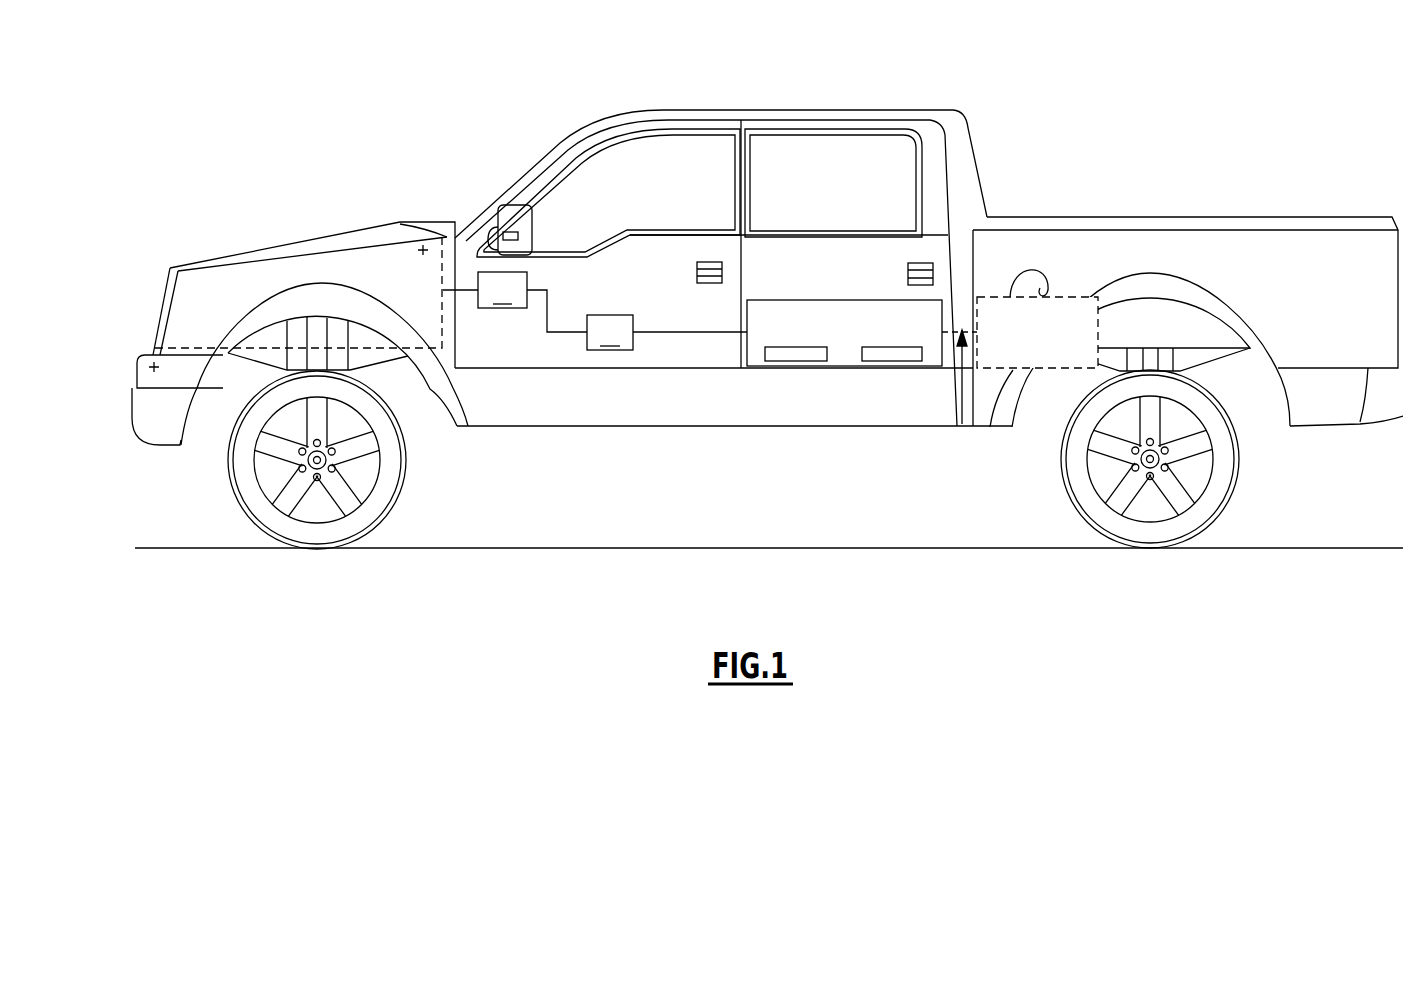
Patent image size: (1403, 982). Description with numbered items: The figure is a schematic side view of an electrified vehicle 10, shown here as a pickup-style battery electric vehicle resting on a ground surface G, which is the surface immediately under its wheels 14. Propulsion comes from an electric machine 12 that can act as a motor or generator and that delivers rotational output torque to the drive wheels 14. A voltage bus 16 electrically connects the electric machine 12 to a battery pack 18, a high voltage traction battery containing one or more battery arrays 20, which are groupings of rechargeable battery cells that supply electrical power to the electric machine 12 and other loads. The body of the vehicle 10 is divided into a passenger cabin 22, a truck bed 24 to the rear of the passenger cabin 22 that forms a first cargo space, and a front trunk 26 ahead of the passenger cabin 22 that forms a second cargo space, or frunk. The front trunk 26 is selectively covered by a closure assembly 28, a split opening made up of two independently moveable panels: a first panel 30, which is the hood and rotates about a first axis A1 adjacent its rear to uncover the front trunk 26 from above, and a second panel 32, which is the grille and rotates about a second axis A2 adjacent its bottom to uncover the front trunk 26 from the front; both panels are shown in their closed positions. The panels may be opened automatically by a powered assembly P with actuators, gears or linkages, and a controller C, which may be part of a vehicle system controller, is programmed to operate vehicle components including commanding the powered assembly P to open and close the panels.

The electrified vehicle 10 is at (734, 323).
The electric machine 12 is at (1040, 288).
The drive wheels 14 is at (305, 532).
The voltage bus 16 is at (966, 426).
The battery pack 18 is at (862, 335).
The battery arrays 20 is at (878, 356).
The passenger cabin 22 is at (640, 172).
The truck bed 24 is at (1167, 217).
The front trunk 26 is at (428, 293).
The closure assembly 28 is at (262, 218).
The first panel 30 is at (330, 237).
The second panel 32 is at (152, 330).
The first axis A1 is at (421, 255).
The second axis A2 is at (152, 367).
The ground surface G is at (512, 548).
The powered assembly P is at (515, 302).
The controller C is at (667, 332).